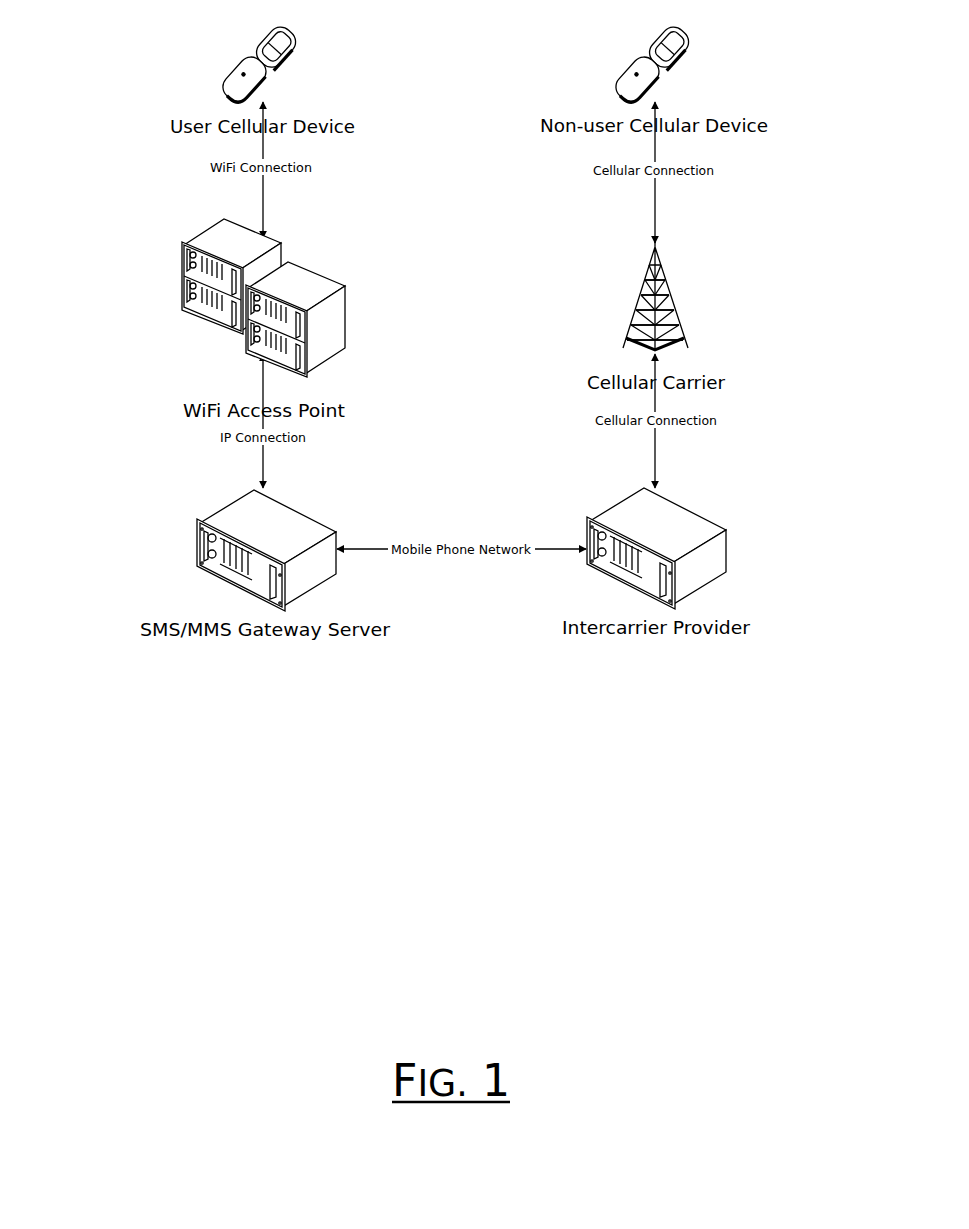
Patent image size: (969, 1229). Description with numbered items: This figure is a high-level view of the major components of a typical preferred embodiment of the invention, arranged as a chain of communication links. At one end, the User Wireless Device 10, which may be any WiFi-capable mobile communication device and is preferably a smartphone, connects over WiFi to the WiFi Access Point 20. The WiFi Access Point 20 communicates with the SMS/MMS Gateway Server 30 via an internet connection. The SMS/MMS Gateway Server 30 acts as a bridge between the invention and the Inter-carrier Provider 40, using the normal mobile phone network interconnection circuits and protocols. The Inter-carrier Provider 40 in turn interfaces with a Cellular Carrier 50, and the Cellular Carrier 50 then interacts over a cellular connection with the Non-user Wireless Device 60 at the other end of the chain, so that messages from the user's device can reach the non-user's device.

The User Wireless Device 10 is at (236, 72).
The WiFi Access Point 20 is at (234, 283).
The SMS/MMS Gateway Server 30 is at (234, 532).
The Inter-carrier Provider 40 is at (670, 560).
The Cellular Carrier 50 is at (677, 321).
The Non-user Wireless Device 60 is at (673, 88).